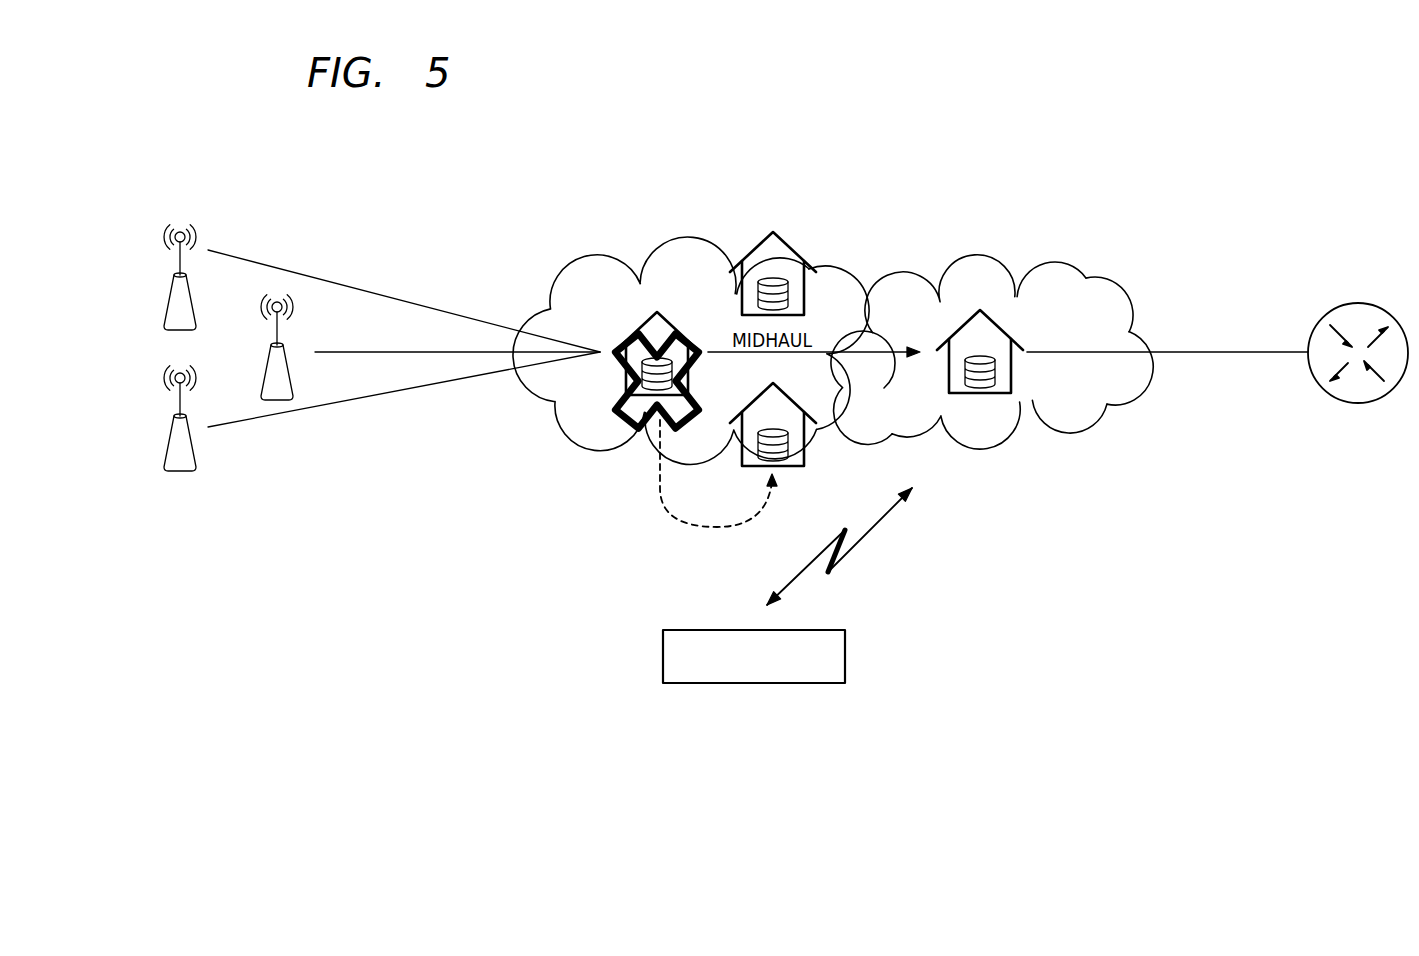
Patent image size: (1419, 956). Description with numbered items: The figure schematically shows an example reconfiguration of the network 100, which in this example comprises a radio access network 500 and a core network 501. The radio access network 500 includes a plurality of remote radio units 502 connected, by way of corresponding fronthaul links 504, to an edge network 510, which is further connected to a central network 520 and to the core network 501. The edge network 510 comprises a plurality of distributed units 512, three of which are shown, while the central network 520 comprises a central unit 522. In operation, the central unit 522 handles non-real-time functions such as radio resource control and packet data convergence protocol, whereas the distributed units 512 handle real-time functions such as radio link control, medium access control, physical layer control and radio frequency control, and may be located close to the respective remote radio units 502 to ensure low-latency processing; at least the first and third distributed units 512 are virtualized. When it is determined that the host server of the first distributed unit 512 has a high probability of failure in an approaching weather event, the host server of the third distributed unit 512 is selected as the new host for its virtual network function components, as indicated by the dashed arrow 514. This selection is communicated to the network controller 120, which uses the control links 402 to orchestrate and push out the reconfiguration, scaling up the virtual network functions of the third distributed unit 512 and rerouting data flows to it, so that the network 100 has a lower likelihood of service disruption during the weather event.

The network 100 is at (396, 132).
The radio access network 500 is at (800, 168).
The remote radio unit 502 is at (165, 312).
The fronthaul link 504 is at (293, 272).
The edge network 510 is at (572, 266).
The distributed unit 512 is at (820, 472).
The dashed arrow 514 is at (680, 515).
The central network 520 is at (1013, 267).
The central unit 522 is at (1007, 337).
The core network 501 is at (1362, 303).
The control link 402 is at (875, 525).
The network controller 120 is at (663, 650).